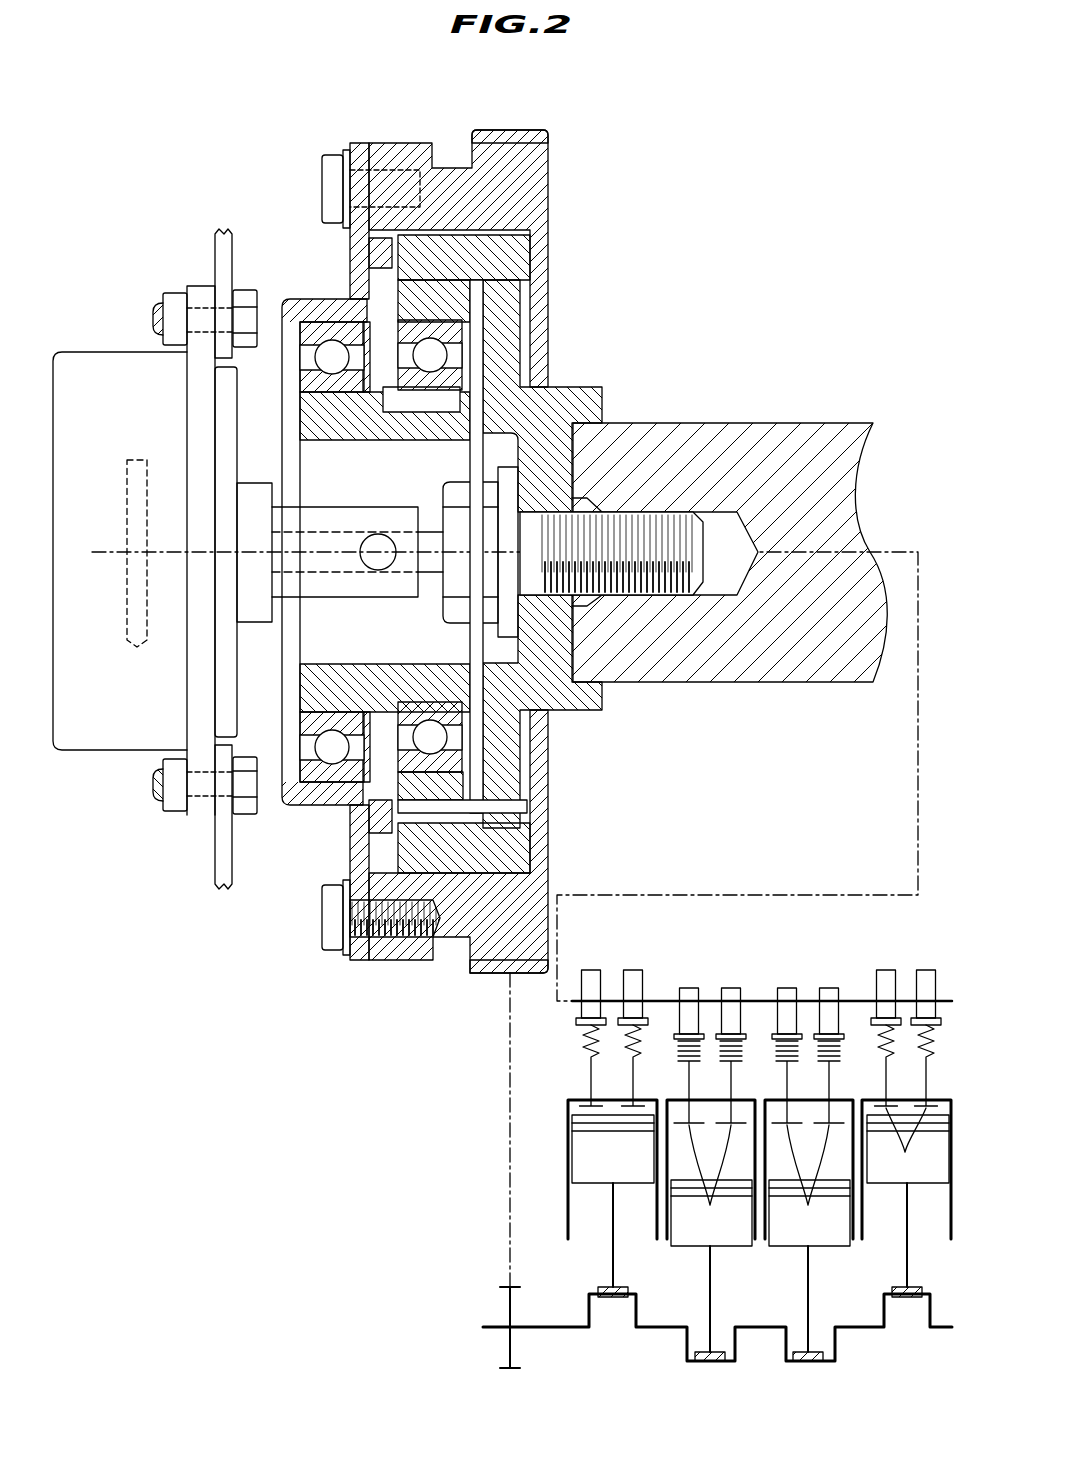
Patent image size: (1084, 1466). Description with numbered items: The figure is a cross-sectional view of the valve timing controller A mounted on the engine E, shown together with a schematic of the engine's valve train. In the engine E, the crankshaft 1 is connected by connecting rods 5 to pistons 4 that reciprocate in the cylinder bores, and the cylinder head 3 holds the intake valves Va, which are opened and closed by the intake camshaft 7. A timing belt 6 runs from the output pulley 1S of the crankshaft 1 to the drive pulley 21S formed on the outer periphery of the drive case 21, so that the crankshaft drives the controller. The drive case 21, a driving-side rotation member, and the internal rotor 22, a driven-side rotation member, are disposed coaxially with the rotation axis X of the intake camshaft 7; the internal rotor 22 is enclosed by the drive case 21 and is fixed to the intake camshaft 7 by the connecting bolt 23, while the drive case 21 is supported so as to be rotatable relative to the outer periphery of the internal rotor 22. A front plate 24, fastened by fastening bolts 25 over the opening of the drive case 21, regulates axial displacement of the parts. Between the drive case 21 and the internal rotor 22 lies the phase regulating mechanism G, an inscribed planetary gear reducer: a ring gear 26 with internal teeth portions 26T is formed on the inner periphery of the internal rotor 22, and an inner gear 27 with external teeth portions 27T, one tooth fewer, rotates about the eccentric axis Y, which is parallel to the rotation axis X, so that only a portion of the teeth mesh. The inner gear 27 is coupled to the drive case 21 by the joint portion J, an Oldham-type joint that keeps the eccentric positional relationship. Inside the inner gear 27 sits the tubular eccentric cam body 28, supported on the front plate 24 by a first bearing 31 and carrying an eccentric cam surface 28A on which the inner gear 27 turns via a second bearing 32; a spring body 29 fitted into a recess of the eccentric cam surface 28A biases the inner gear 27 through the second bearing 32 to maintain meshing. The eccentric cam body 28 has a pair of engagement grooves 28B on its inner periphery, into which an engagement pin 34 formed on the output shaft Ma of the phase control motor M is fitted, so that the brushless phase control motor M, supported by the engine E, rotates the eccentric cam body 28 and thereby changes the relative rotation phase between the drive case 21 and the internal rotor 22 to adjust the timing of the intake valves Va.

The valve timing controller A is at (278, 141).
The engine E is at (818, 184).
The phase control motor M is at (103, 352).
The output shaft Ma is at (137, 647).
The rotation axis X is at (495, 770).
The eccentric axis Y is at (268, 545).
The crankshaft 1 is at (543, 1325).
The output pulley 1S is at (508, 1308).
The cylinder head 3 is at (676, 1095).
The piston 4 is at (567, 1163).
The connecting rod 5 is at (612, 1264).
The timing belt 6 is at (509, 1122).
The intake camshaft 7 is at (788, 423).
The drive case 21 is at (549, 165).
The drive pulley 21S is at (508, 135).
The internal rotor 22 is at (487, 237).
The connecting bolt 23 is at (700, 577).
The front plate 24 is at (357, 142).
The fastening bolt 25 is at (322, 188).
The ring gear 26 is at (450, 287).
The internal teeth portion 26T is at (470, 845).
The inner gear 27 is at (473, 308).
The external teeth portion 27T is at (473, 807).
The eccentric cam body 28 is at (296, 421).
The eccentric cam surface 28A is at (418, 702).
The engagement groove 28B is at (337, 562).
The spring body 29 is at (430, 412).
The first bearing 31 is at (290, 358).
The second bearing 32 is at (452, 354).
The engagement pin 34 is at (368, 540).
The phase regulating mechanism G is at (474, 757).
The joint portion J is at (378, 812).
The intake valve Va is at (633, 1100).